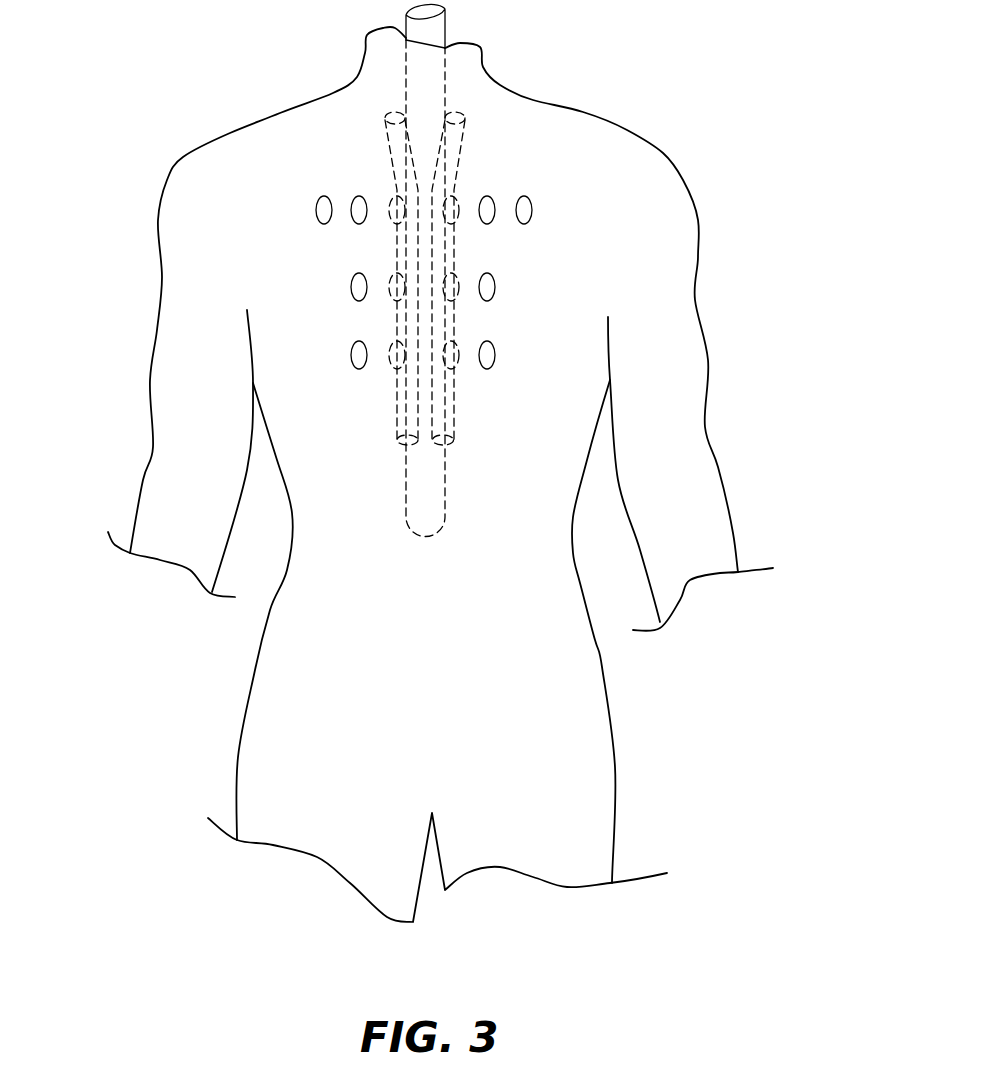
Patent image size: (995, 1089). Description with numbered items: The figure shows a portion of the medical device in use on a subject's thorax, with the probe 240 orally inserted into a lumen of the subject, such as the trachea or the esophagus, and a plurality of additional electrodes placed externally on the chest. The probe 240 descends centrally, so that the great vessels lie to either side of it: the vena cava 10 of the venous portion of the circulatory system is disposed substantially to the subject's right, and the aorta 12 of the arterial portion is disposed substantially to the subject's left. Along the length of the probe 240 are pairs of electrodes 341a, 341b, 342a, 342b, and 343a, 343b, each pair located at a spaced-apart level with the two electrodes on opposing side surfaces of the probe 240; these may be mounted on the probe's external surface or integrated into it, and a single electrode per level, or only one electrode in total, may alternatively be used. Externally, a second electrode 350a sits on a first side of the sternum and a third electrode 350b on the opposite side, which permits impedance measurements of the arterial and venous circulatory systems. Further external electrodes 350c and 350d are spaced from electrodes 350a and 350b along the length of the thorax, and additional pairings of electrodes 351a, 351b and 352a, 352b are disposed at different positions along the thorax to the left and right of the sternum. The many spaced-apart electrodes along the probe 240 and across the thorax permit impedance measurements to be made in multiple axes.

The vena cava 10 is at (397, 428).
The aorta 12 is at (455, 410).
The probe 240 is at (447, 25).
The probe electrode 341a is at (461, 195).
The probe electrode 341b is at (395, 200).
The probe electrode 342a is at (455, 271).
The probe electrode 342b is at (393, 272).
The probe electrode 343a is at (455, 345).
The probe electrode 343b is at (390, 348).
The second electrode 350a is at (489, 198).
The third electrode 350b is at (356, 198).
The external electrode 350c is at (531, 209).
The external electrode 350d is at (316, 208).
The external electrode 351a is at (490, 276).
The external electrode 351b is at (356, 276).
The external electrode 352a is at (492, 363).
The external electrode 352b is at (357, 367).